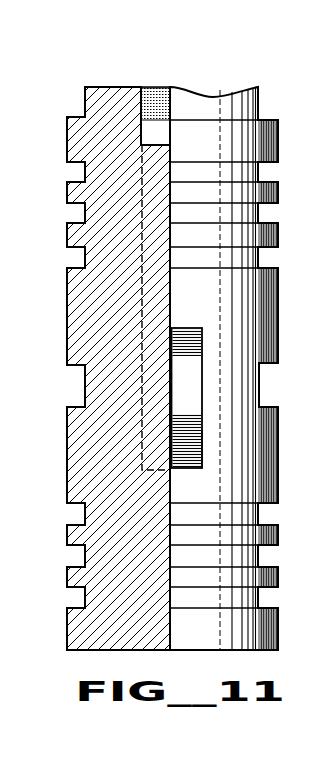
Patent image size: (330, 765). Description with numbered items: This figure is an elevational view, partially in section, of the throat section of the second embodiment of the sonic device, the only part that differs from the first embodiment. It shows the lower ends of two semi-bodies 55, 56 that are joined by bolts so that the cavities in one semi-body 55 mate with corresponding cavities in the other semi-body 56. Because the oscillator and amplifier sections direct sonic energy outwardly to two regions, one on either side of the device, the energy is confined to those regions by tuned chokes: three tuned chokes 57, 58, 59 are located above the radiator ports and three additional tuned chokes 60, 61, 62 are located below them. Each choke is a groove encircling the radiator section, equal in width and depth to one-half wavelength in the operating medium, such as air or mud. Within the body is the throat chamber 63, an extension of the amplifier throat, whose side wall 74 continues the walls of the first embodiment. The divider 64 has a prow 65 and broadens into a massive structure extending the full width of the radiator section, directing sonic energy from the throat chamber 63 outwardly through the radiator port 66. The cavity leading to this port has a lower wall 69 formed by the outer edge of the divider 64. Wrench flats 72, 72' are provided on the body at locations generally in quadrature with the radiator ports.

The semi-body 55 is at (72, 300).
The semi-body 56 is at (278, 425).
The tuned choke 57 is at (266, 172).
The tuned choke 58 is at (266, 213).
The tuned choke 59 is at (266, 259).
The tuned choke 60 is at (266, 514).
The tuned choke 61 is at (266, 556).
The tuned choke 62 is at (266, 598).
The throat chamber 63 is at (151, 113).
The divider 64 is at (152, 290).
The prow 65 is at (160, 156).
The radiator port 66 is at (194, 345).
The lower wall 69 is at (188, 444).
The wrench flat 72 is at (285, 384).
The wrench flat 72' is at (56, 386).
The side wall 74 is at (164, 90).